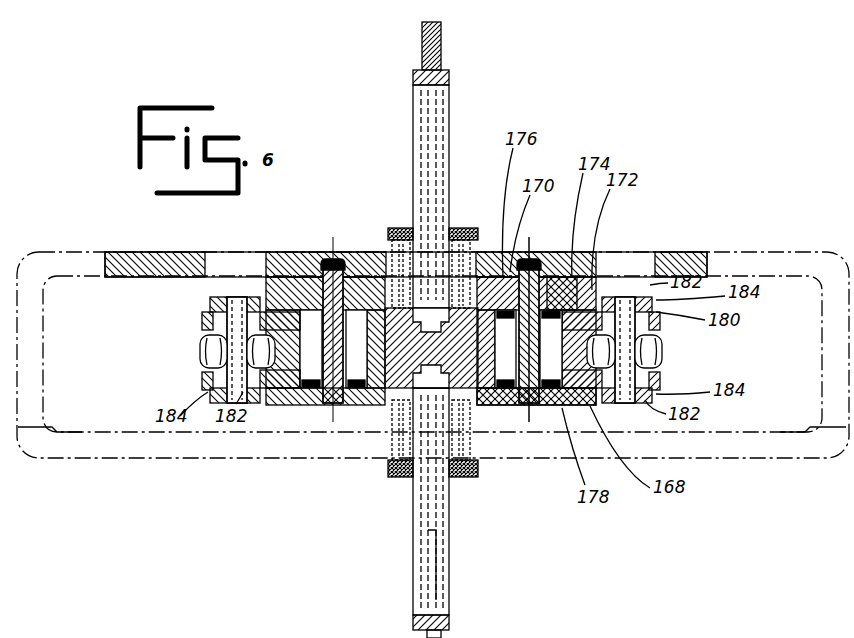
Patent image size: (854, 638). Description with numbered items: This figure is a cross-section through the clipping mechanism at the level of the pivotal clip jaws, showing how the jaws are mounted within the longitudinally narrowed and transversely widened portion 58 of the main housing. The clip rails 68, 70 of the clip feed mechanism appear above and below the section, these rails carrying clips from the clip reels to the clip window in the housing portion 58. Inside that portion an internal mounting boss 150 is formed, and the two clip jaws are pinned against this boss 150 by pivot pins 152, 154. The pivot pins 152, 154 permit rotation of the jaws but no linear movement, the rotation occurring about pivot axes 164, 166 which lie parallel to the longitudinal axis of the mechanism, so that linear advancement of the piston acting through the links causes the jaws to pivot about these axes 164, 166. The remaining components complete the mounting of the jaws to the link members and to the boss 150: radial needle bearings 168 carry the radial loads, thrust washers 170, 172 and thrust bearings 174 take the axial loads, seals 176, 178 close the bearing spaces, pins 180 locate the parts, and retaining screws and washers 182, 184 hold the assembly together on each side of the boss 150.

The longitudinally narrowed and transversely widened portion 58 is at (560, 278).
The clip rail 68 is at (480, 637).
The clip rail 70 is at (442, 46).
The internal mounting boss 150 is at (617, 277).
The pivot pin 152 is at (300, 408).
The pivot pin 154 is at (538, 408).
The pivot axis 164 is at (322, 430).
The pivot axis 166 is at (510, 420).
The radial needle bearings 168 is at (285, 390).
The thrust washer 170 is at (316, 262).
The thrust washer 172 is at (372, 290).
The thrust bearings 174 is at (353, 278).
The seal 176 is at (296, 277).
The seal 178 is at (355, 408).
The pins 180 is at (208, 372).
The retaining screws and washers 182 is at (214, 300).
The retaining screws and washers 184 is at (204, 312).